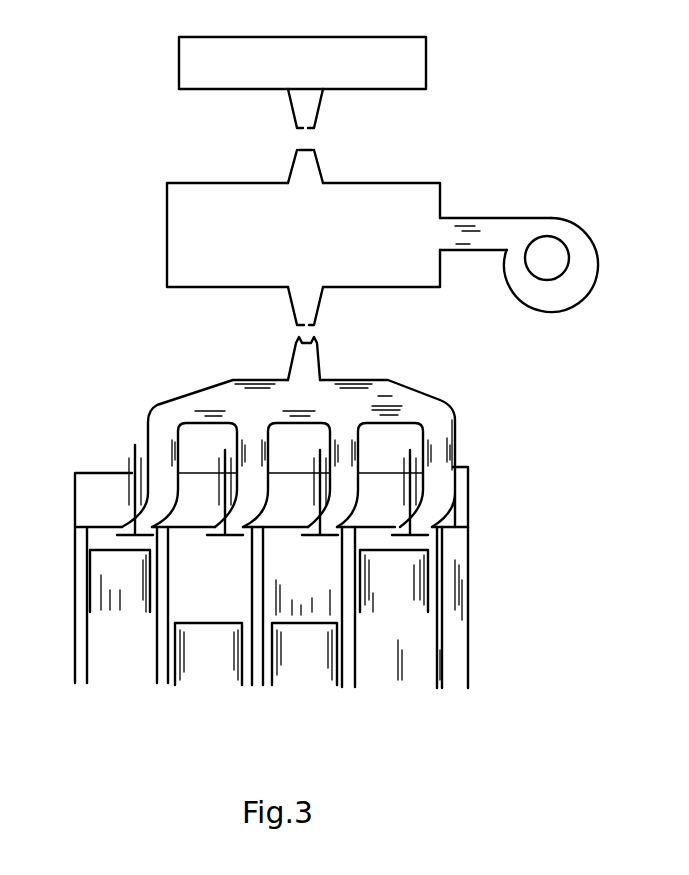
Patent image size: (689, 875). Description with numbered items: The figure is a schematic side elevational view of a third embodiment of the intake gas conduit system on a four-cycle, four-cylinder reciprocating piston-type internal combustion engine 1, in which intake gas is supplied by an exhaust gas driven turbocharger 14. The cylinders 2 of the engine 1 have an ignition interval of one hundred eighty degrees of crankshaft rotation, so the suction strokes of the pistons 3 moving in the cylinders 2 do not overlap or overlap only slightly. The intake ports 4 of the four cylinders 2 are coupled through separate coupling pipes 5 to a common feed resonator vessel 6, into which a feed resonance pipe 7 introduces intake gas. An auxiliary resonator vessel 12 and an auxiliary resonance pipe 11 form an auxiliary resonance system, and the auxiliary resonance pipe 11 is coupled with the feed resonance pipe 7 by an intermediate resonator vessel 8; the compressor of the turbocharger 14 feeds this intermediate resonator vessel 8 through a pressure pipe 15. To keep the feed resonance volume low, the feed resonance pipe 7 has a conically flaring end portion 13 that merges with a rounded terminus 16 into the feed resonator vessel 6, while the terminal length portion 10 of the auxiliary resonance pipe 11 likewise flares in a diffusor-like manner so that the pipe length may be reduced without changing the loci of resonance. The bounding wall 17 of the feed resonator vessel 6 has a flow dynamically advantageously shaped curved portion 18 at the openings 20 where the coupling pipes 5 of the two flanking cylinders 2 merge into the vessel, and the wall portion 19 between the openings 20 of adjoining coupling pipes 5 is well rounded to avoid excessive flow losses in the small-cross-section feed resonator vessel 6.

The internal combustion engine 1 is at (472, 665).
The cylinders 2 is at (353, 647).
The pistons 3 is at (86, 601).
The intake ports 4 is at (123, 518).
The coupling pipes 5 is at (156, 444).
The feed resonator vessel 6 is at (176, 407).
The feed resonance pipe 7 is at (303, 317).
The intermediate resonator vessel 8 is at (198, 197).
The terminal length portion 10 is at (320, 97).
The auxiliary resonance pipe 11 is at (303, 156).
The auxiliary resonator vessel 12 is at (244, 46).
The conically flaring end portion 13 is at (317, 293).
The turbocharger 14 is at (562, 294).
The pressure pipe 15 is at (486, 253).
The rounded terminus 16 is at (327, 370).
The bounding wall 17 is at (392, 370).
The curved portion 18 is at (453, 420).
The wall portion 19 is at (261, 440).
The openings 20 is at (249, 437).